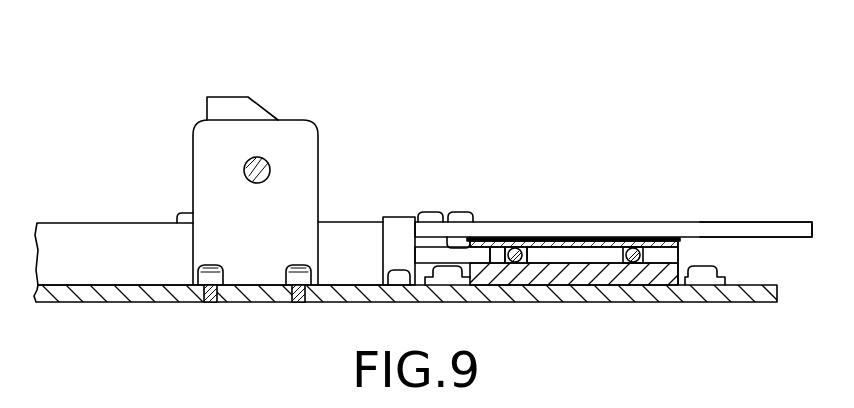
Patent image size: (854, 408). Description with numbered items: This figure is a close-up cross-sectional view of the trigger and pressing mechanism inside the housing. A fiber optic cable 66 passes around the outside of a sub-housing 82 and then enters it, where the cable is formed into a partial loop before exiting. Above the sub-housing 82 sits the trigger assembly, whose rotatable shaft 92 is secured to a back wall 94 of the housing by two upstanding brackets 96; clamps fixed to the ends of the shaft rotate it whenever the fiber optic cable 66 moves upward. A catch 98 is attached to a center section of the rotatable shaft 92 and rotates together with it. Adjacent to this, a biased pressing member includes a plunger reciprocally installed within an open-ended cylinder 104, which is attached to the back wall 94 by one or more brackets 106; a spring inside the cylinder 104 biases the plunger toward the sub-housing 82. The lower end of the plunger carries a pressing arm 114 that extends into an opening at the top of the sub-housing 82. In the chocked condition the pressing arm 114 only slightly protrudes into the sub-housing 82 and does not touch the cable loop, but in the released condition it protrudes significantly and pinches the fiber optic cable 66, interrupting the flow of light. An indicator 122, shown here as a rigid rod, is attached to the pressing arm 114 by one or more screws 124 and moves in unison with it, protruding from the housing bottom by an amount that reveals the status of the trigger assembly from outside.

The fiber optic cable 66 is at (514, 249).
The sub-housing 82 is at (583, 223).
The rotatable shaft 92 is at (245, 168).
The back wall 94 is at (112, 295).
The upstanding brackets 96 is at (303, 123).
The catch 98 is at (243, 100).
The open-ended cylinder 104 is at (104, 230).
The brackets 106 is at (402, 223).
The pressing arm 114 is at (486, 260).
The indicator 122 is at (780, 227).
The screws 124 is at (428, 210).